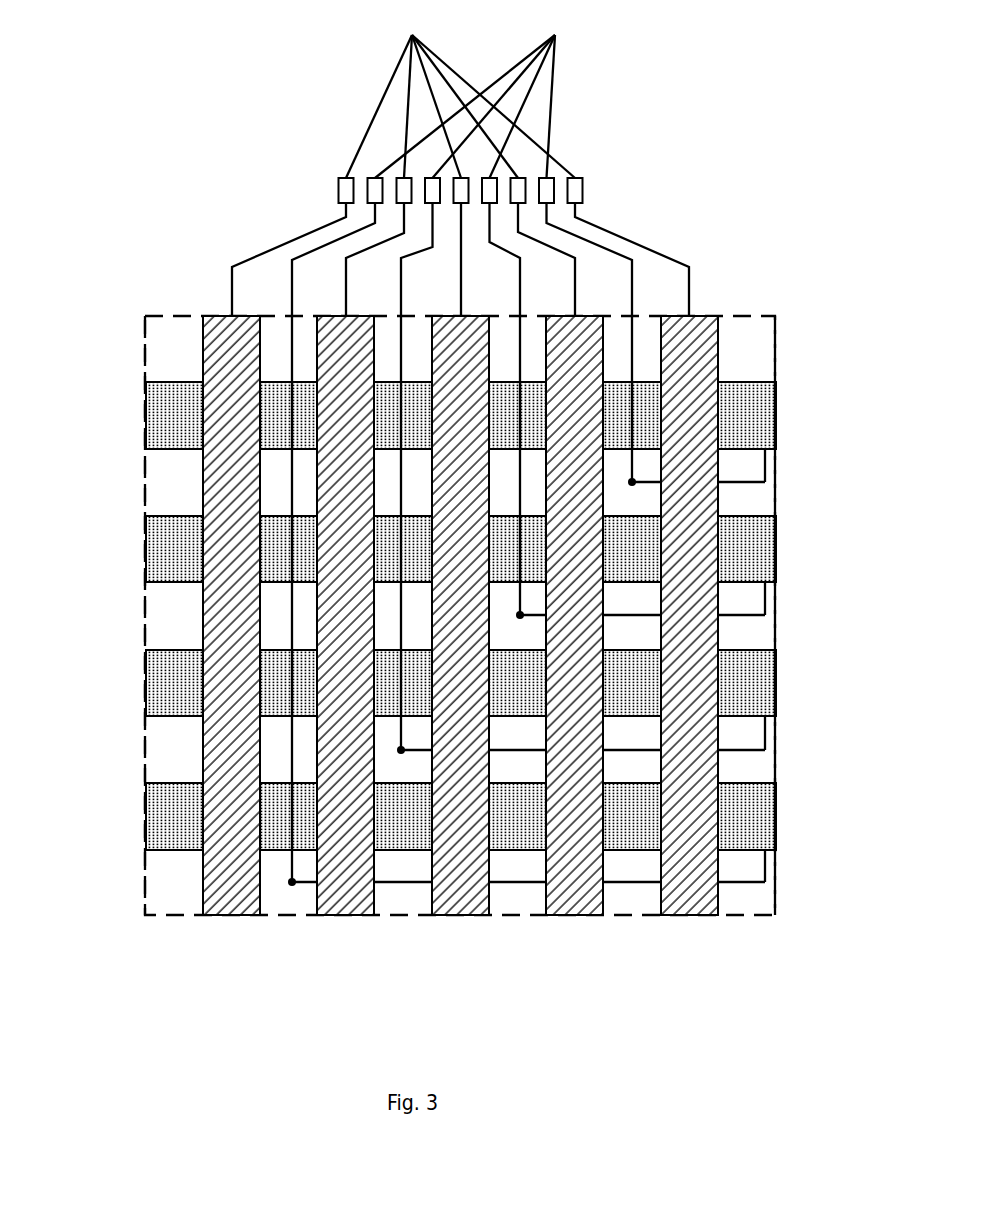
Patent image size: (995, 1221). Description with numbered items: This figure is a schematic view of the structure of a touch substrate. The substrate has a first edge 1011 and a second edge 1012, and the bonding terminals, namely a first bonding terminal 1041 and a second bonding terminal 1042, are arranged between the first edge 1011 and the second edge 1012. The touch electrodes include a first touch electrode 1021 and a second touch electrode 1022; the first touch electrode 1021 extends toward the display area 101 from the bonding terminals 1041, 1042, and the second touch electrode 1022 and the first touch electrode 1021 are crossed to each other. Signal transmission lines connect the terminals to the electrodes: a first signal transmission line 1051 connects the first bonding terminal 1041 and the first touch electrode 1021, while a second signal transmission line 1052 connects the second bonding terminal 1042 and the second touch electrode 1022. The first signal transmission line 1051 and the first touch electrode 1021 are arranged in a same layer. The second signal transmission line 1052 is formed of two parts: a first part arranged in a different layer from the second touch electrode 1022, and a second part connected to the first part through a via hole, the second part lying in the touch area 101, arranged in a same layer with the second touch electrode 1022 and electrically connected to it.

The display area 101 is at (193, 890).
The first edge 1011 is at (145, 335).
The second edge 1012 is at (775, 888).
The first touch electrode 1021 is at (245, 900).
The second touch electrode 1022 is at (167, 417).
The first bonding terminal 1041 is at (461, 101).
The second bonding terminal 1042 is at (472, 101).
The first signal transmission line 1051 is at (232, 267).
The second signal transmission line 1052 is at (292, 260).